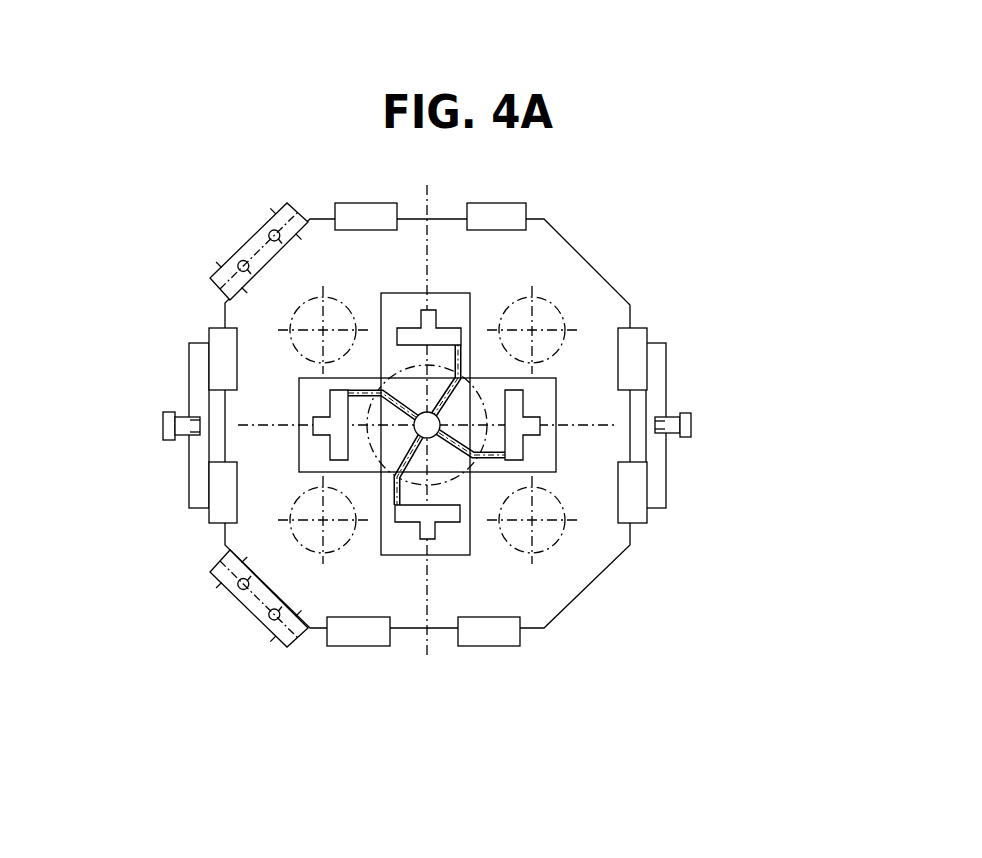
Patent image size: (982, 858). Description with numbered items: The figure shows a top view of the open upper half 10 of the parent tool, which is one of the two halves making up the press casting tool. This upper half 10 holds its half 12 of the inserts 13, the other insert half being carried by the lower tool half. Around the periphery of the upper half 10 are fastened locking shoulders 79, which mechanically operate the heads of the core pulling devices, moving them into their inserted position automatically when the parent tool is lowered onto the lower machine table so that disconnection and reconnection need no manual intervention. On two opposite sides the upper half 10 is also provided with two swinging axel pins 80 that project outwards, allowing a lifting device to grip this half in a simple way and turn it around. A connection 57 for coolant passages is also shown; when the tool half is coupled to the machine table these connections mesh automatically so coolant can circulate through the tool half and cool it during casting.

The upper half 10 is at (580, 567).
The half of inserts 12 is at (543, 445).
The inserts 13 is at (557, 378).
The connection for coolant passages 57 is at (243, 247).
The locking shoulders 79 is at (505, 203).
The swinging axel pins 80 is at (165, 417).